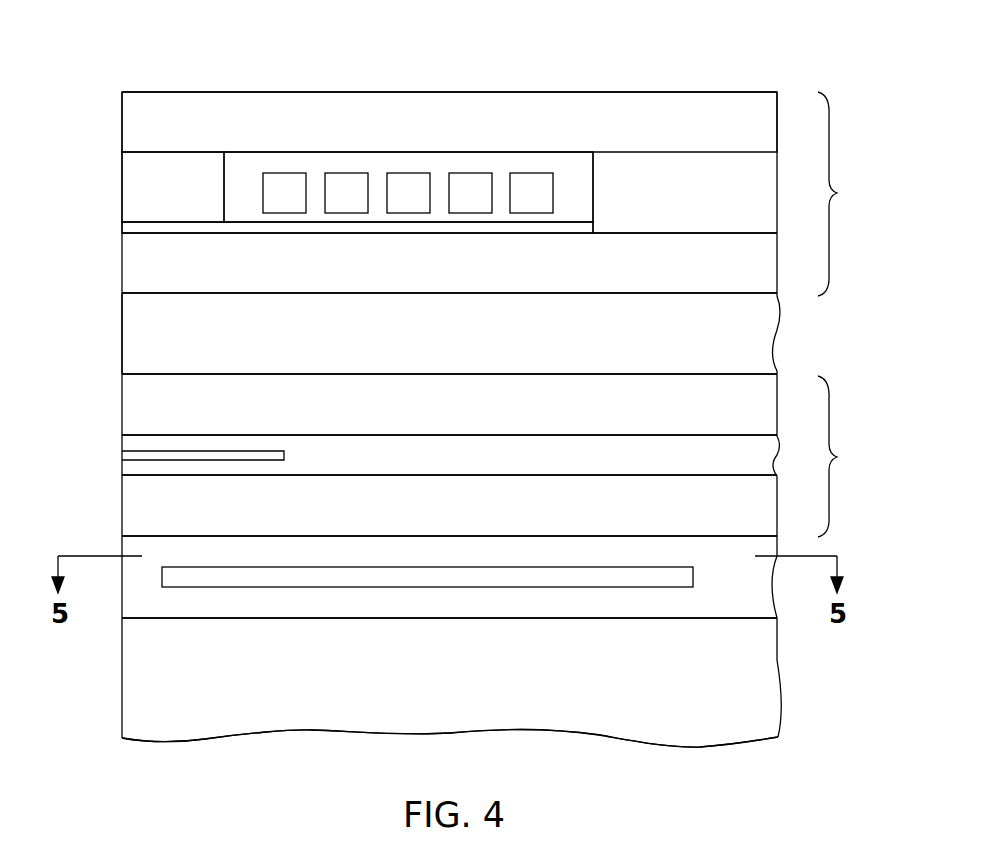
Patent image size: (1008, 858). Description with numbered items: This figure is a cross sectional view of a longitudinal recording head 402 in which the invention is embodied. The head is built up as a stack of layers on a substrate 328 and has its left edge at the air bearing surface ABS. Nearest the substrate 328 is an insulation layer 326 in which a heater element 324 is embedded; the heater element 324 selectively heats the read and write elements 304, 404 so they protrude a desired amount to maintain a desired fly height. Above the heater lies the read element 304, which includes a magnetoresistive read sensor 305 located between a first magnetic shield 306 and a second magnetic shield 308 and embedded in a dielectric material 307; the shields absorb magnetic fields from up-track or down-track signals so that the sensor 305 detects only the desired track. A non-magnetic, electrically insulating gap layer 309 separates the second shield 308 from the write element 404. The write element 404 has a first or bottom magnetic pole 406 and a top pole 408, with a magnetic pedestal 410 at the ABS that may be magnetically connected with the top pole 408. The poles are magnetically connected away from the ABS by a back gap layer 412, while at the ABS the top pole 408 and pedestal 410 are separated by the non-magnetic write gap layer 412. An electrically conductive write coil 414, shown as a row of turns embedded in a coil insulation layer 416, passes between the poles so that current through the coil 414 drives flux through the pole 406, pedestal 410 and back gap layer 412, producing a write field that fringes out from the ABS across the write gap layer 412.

The longitudinal recording head 402 is at (616, 34).
The longitudinal write element 404 is at (829, 133).
The read element 304 is at (826, 385).
The first or bottom magnetic pole 406 is at (453, 258).
The top pole 408 is at (440, 113).
The magnetic pedestal 410 is at (210, 187).
The back gap layer / write gap layer 412 is at (122, 228).
The write coil 414 is at (481, 164).
The coil insulation layer 416 is at (243, 163).
The magnetoresistive read sensor 305 is at (284, 455).
The first magnetic shield 306 is at (373, 505).
The dielectric material 307 is at (640, 455).
The second magnetic shield 308 is at (378, 407).
The gap layer 309 is at (398, 333).
The heater element 324 is at (582, 582).
The insulation layer 326 is at (460, 602).
The substrate 328 is at (497, 677).
The air bearing surface ABS is at (122, 330).